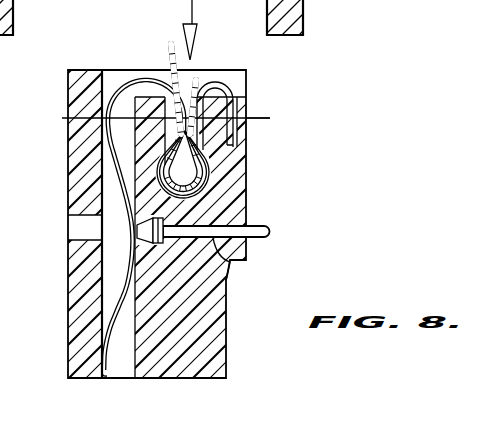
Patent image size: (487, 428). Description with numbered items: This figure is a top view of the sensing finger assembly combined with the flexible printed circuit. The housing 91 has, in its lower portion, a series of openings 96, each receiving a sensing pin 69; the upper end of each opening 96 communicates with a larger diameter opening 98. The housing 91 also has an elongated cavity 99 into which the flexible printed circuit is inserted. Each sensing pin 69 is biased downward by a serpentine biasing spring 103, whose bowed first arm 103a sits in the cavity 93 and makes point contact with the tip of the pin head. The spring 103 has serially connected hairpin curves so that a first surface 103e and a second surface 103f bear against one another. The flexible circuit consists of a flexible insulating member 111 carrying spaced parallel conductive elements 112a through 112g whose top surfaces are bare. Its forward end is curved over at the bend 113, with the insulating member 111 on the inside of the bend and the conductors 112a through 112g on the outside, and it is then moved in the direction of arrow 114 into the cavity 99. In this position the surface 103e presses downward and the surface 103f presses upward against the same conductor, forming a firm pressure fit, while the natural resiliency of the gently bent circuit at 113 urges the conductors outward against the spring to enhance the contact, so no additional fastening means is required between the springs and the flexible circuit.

The sensing pin 69 is at (270, 238).
The housing 91 is at (86, 161).
The cavity 93 is at (103, 268).
The opening 96 is at (232, 262).
The larger diameter opening 98 is at (82, 240).
The elongated cavity 99 is at (203, 74).
The biasing spring 103 is at (123, 79).
The bowed first arm 103a is at (127, 187).
The first surface 103e is at (141, 122).
The second surface 103f is at (277, 123).
The flexible insulating member 111 is at (171, 51).
The conductive element 112a is at (136, 215).
The conductive element 112g is at (279, 135).
The bend 113 is at (163, 41).
The arrow 114 is at (192, 13).